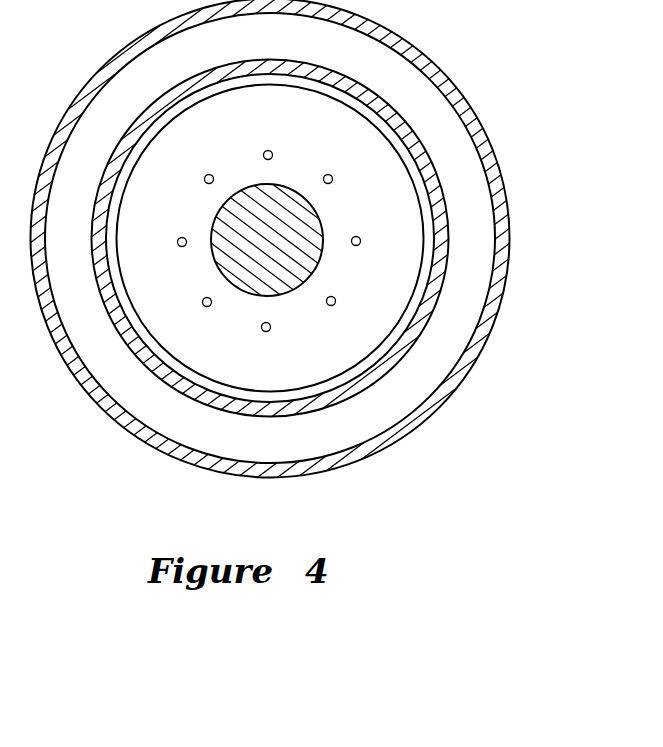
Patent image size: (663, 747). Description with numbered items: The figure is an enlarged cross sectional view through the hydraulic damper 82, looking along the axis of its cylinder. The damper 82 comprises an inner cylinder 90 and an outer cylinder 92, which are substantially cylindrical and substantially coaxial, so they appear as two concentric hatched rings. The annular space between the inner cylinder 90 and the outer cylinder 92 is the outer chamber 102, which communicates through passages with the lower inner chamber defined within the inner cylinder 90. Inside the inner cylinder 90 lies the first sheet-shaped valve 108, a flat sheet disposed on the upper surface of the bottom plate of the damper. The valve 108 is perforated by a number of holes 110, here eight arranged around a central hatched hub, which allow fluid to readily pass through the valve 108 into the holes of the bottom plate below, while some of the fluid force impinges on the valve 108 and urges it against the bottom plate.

The hydraulic damper 82 is at (509, 163).
The inner cylinder 90 is at (450, 257).
The outer cylinder 92 is at (502, 303).
The outer chamber 102 is at (442, 108).
The first sheet-shaped valve 108 is at (363, 337).
The holes 110 is at (324, 176).